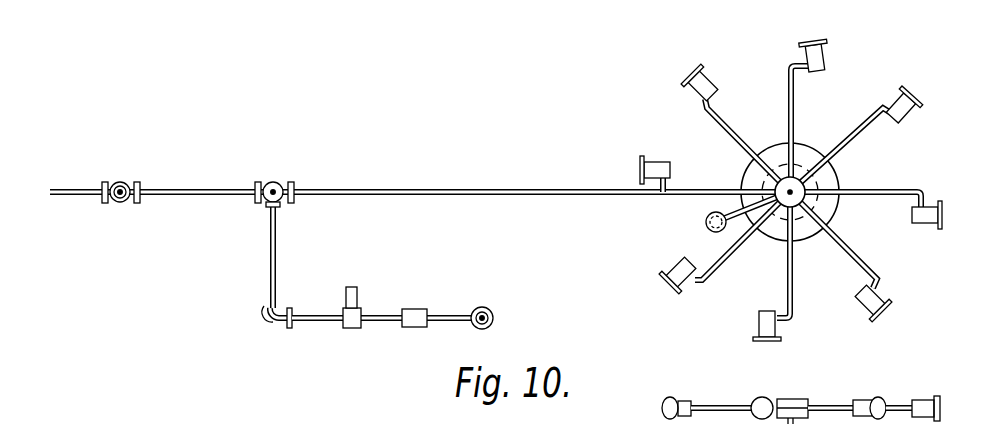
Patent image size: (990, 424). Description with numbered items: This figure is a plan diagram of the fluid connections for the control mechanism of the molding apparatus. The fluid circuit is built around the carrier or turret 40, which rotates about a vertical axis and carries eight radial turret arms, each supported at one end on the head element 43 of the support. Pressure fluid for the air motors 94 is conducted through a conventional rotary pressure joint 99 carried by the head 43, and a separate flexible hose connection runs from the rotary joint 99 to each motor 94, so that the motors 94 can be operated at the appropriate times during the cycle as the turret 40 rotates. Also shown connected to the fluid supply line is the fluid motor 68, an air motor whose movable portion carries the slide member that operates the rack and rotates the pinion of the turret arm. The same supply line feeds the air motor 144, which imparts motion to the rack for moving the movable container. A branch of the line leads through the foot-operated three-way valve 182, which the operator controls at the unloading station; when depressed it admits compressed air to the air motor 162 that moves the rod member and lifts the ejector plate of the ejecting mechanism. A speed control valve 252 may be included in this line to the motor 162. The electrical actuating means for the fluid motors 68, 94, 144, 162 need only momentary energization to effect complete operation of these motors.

The carrier or turret 40 is at (877, 164).
The head element 43 is at (807, 147).
The fluid motor 68 is at (706, 223).
The air motor 94 is at (653, 163).
The rotary pressure joint 99 is at (810, 202).
The air motor 144 is at (120, 203).
The air motor 162 is at (492, 308).
The foot-operated three-way valve 182 is at (356, 295).
The speed control valve 252 is at (415, 312).